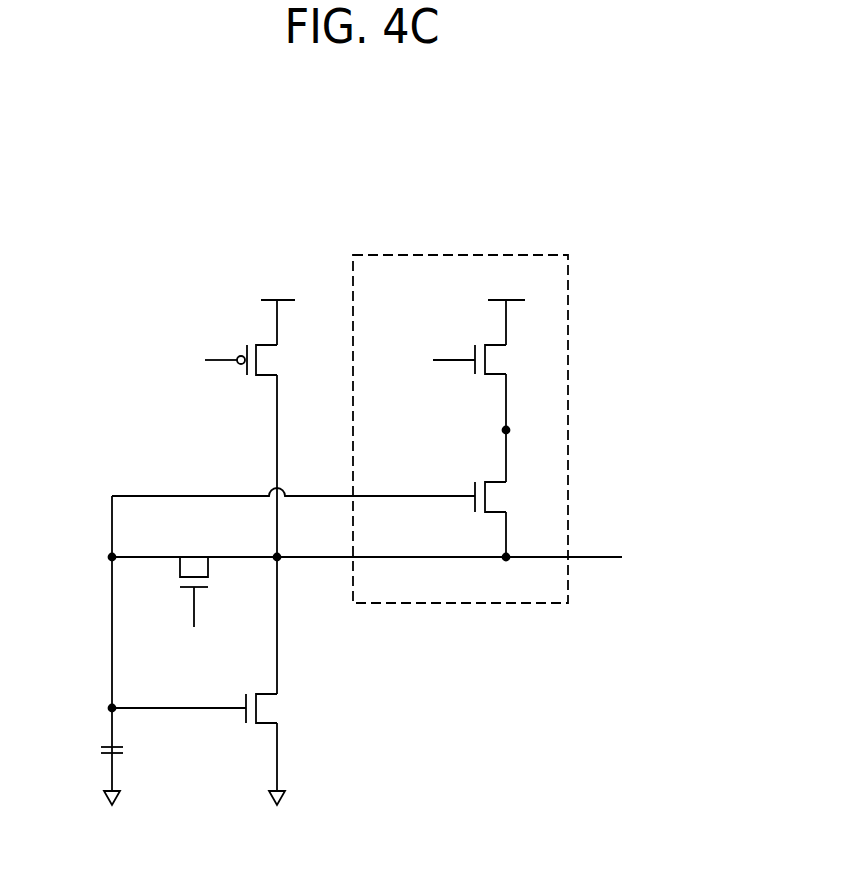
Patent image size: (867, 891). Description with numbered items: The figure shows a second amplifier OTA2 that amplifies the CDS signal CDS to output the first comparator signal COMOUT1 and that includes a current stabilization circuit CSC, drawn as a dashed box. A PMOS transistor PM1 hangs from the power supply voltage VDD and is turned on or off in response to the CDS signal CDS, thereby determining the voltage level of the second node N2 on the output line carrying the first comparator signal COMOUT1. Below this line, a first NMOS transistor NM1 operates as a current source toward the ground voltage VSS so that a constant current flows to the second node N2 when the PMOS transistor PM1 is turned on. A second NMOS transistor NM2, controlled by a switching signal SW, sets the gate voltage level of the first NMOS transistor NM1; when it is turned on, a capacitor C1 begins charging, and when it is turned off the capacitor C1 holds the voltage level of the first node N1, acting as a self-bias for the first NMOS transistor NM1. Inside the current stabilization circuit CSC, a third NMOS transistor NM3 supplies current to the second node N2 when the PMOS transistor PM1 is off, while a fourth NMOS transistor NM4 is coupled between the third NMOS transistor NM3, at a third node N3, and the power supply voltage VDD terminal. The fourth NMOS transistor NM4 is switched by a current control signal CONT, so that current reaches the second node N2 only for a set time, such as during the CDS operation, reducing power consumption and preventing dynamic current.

The second amplifier OTA2 is at (660, 167).
The current stabilization circuit CSC is at (484, 255).
The PMOS transistor PM1 is at (277, 497).
The first NMOS transistor NM1 is at (214, 742).
The second NMOS transistor NM2 is at (194, 560).
The third NMOS transistor NM3 is at (511, 493).
The fourth NMOS transistor NM4 is at (511, 365).
The capacitor C1 is at (125, 751).
The switching signal SW is at (195, 623).
The first node N1 is at (98, 643).
The second node N2 is at (506, 573).
The third node N3 is at (522, 430).
The CDS signal CDS is at (199, 363).
The current control signal CONT is at (426, 361).
The first comparator signal COMOUT1 is at (413, 558).
The power supply voltage VDD is at (391, 286).
The ground voltage VSS is at (194, 815).